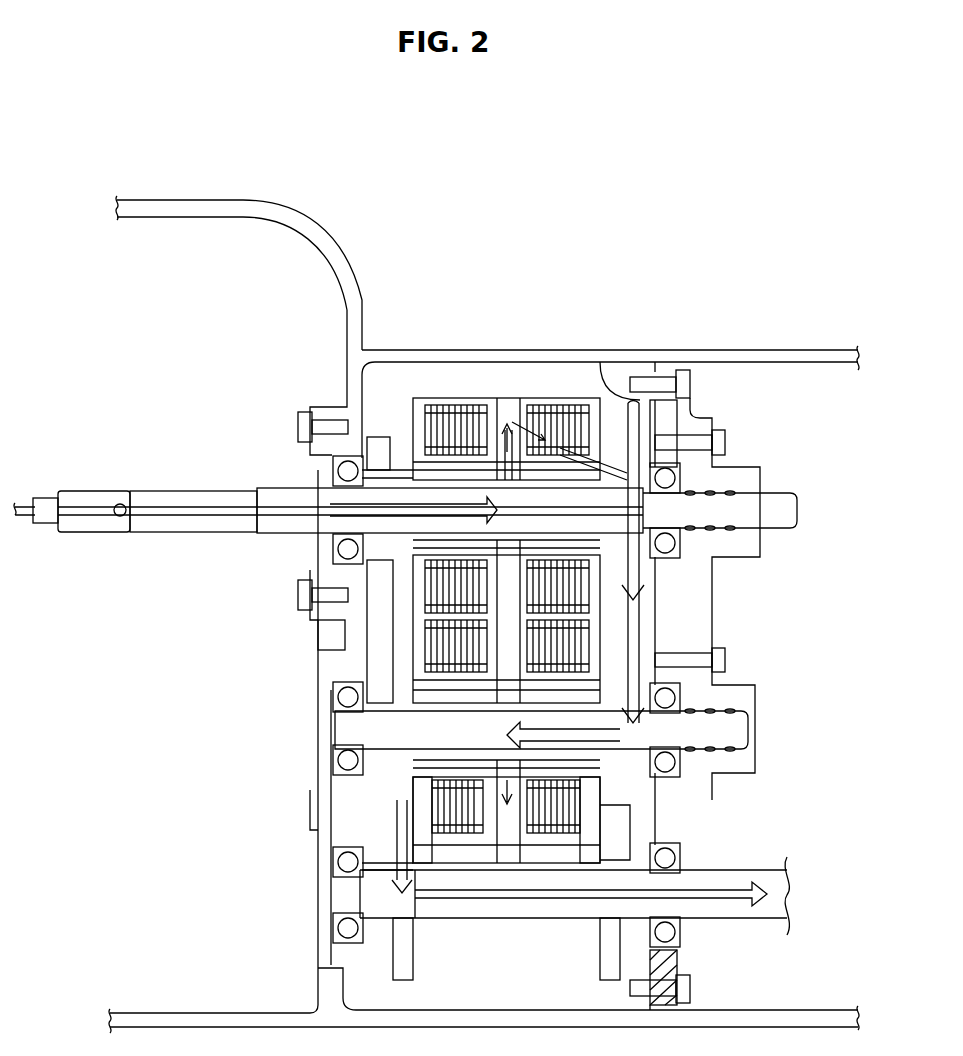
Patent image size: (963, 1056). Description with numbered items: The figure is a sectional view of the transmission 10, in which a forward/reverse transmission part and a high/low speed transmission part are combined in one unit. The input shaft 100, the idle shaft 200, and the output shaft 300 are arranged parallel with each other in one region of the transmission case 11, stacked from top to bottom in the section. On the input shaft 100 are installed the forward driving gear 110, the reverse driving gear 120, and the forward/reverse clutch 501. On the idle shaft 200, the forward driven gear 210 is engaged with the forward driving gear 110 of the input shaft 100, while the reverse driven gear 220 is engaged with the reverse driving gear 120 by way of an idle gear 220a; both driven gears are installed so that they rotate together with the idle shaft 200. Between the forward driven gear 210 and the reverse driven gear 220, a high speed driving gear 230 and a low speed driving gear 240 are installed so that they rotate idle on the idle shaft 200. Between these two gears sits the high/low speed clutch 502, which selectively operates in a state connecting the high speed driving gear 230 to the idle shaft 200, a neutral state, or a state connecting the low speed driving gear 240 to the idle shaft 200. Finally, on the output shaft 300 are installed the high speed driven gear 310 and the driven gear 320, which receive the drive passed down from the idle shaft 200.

The transmission 10 is at (535, 230).
The transmission case 11 is at (350, 268).
The input shaft 100 is at (195, 490).
The forward driving gear 110 is at (600, 402).
The reverse driving gear 120 is at (382, 440).
The forward/reverse clutch 501 is at (518, 407).
The idle shaft 200 is at (342, 730).
The forward driven gear 210 is at (637, 633).
The reverse driven gear 220 is at (375, 673).
The idle gear 220a is at (330, 632).
The high speed driving gear 230 is at (402, 788).
The low speed driving gear 240 is at (610, 792).
The output shaft 300 is at (345, 893).
The high speed driven gear 310 is at (400, 830).
The reverse driven gear 320 is at (608, 822).
The high/low speed clutch 502 is at (510, 815).